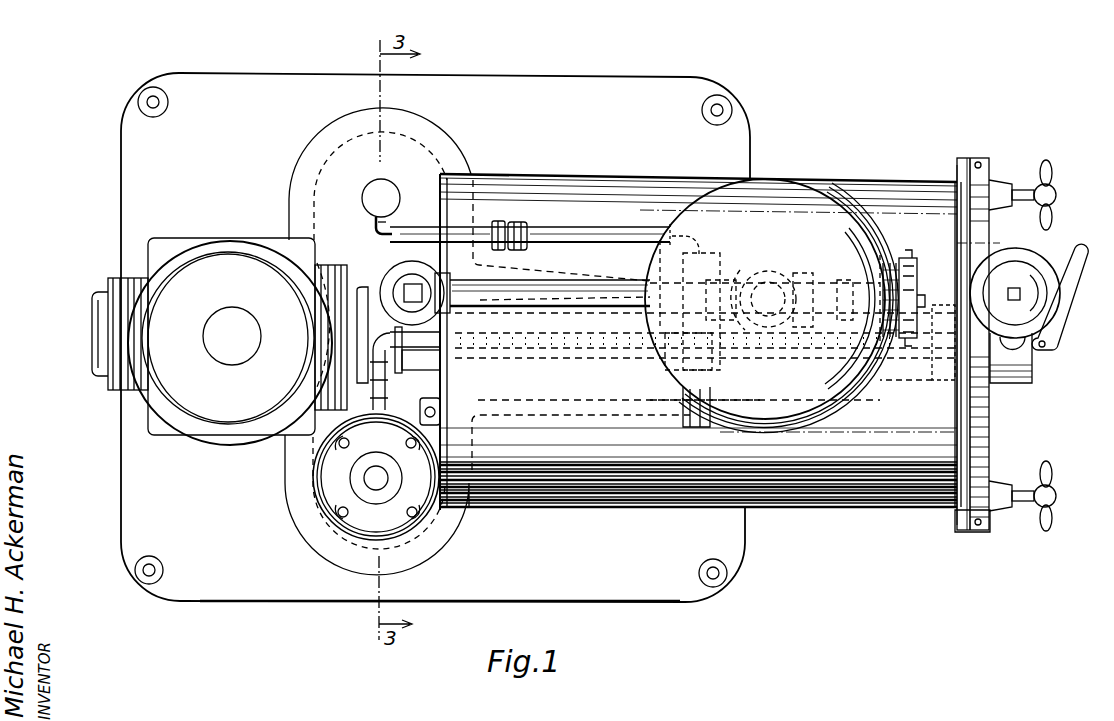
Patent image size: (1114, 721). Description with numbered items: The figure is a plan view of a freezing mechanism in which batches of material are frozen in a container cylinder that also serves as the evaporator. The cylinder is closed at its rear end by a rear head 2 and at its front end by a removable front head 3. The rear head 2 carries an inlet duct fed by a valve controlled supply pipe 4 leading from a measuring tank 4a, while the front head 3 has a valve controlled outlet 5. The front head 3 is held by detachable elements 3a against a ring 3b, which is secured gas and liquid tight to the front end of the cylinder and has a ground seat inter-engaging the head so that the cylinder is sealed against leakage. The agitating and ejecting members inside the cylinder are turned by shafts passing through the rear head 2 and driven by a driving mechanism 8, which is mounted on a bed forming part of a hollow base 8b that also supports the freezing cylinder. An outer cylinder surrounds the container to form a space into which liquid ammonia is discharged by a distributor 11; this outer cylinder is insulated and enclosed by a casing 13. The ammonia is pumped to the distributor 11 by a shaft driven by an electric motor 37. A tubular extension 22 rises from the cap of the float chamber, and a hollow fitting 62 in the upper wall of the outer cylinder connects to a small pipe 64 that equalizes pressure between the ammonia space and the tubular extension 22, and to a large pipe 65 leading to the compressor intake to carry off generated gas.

The rear head 2 is at (85, 333).
The front head 3 is at (983, 418).
The detachable elements 3a is at (1059, 194).
The ring 3b is at (957, 226).
The supply pipe 4 is at (541, 292).
The measuring tank 4a is at (806, 405).
The valve controlled outlet 5 is at (1030, 378).
The driving mechanism 8 is at (167, 242).
The base 8b is at (645, 600).
The distributor 11 is at (540, 345).
The casing 13 is at (886, 500).
The tubular extension 22 is at (386, 190).
The electric motor 37 is at (366, 522).
The hollow fitting 62 is at (672, 367).
The small pipe 64 is at (583, 240).
The large pipe 65 is at (682, 415).